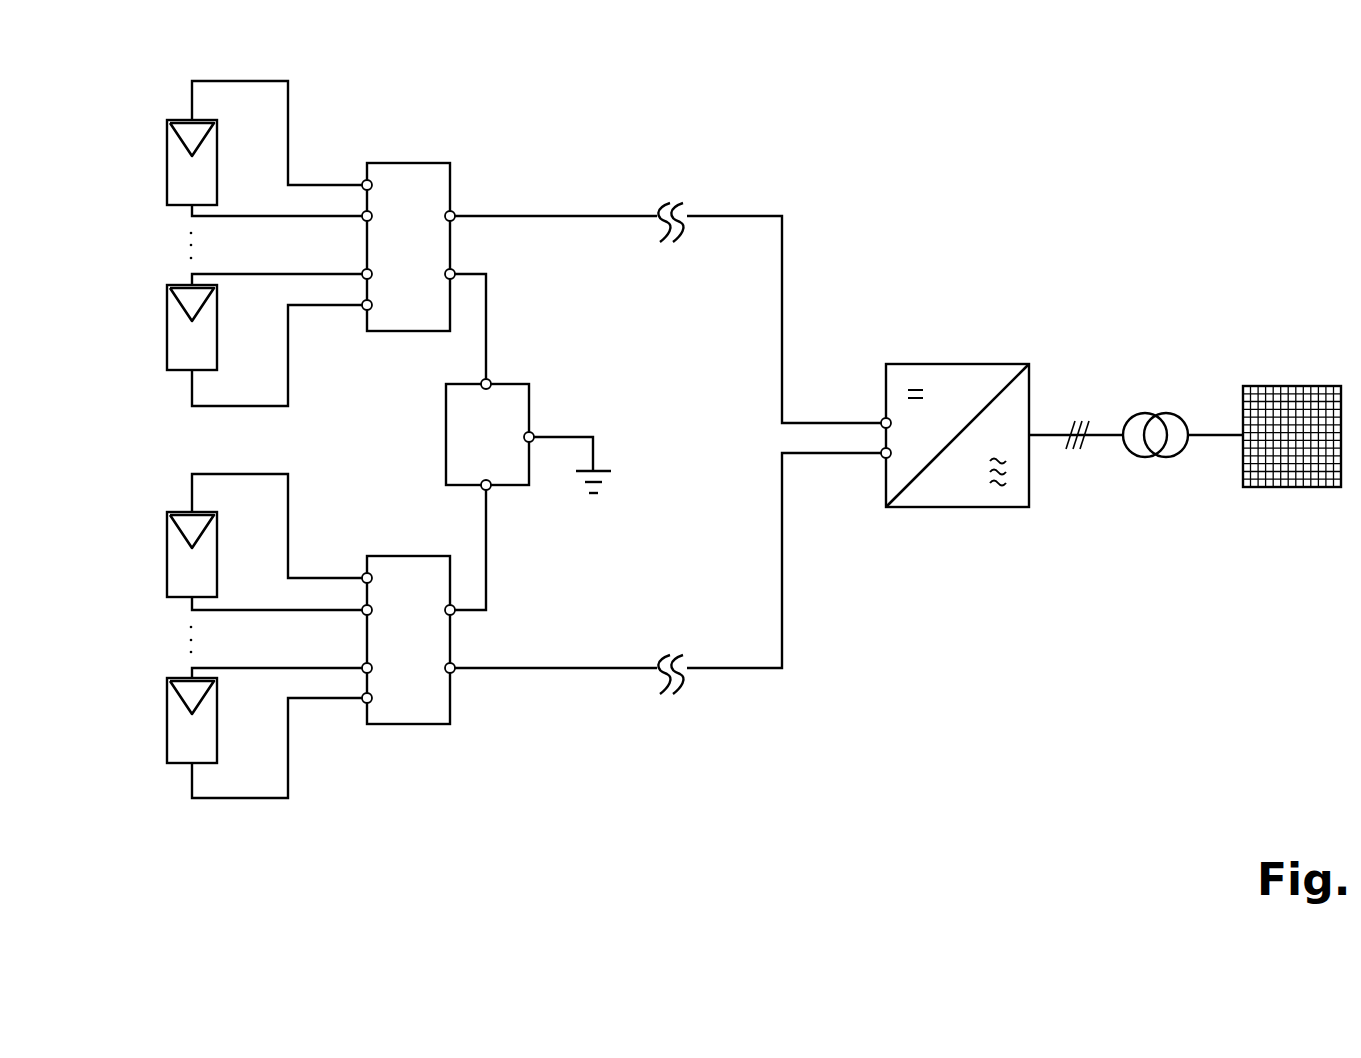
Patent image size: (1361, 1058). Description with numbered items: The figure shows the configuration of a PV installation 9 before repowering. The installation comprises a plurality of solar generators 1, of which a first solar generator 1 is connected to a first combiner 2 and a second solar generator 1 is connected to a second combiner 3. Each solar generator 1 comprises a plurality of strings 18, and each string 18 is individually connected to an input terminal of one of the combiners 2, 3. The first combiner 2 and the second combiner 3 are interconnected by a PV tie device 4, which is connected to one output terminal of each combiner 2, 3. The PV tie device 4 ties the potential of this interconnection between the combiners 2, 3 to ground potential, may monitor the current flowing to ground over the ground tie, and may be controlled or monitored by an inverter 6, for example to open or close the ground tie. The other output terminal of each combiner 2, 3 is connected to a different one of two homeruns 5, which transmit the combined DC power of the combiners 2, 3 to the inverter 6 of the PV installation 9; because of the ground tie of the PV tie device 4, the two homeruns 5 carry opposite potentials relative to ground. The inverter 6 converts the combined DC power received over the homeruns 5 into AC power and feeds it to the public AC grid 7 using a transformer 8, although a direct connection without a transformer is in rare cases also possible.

The solar generator 1 is at (103, 177).
The first combiner 2 is at (427, 162).
The second combiner 3 is at (425, 725).
The PV tie device 4 is at (525, 382).
The homerun 5 is at (748, 215).
The inverter 6 is at (998, 362).
The AC grid 7 is at (1301, 385).
The transformer 8 is at (1168, 411).
The PV installation 9 is at (910, 645).
The string 18 is at (168, 132).